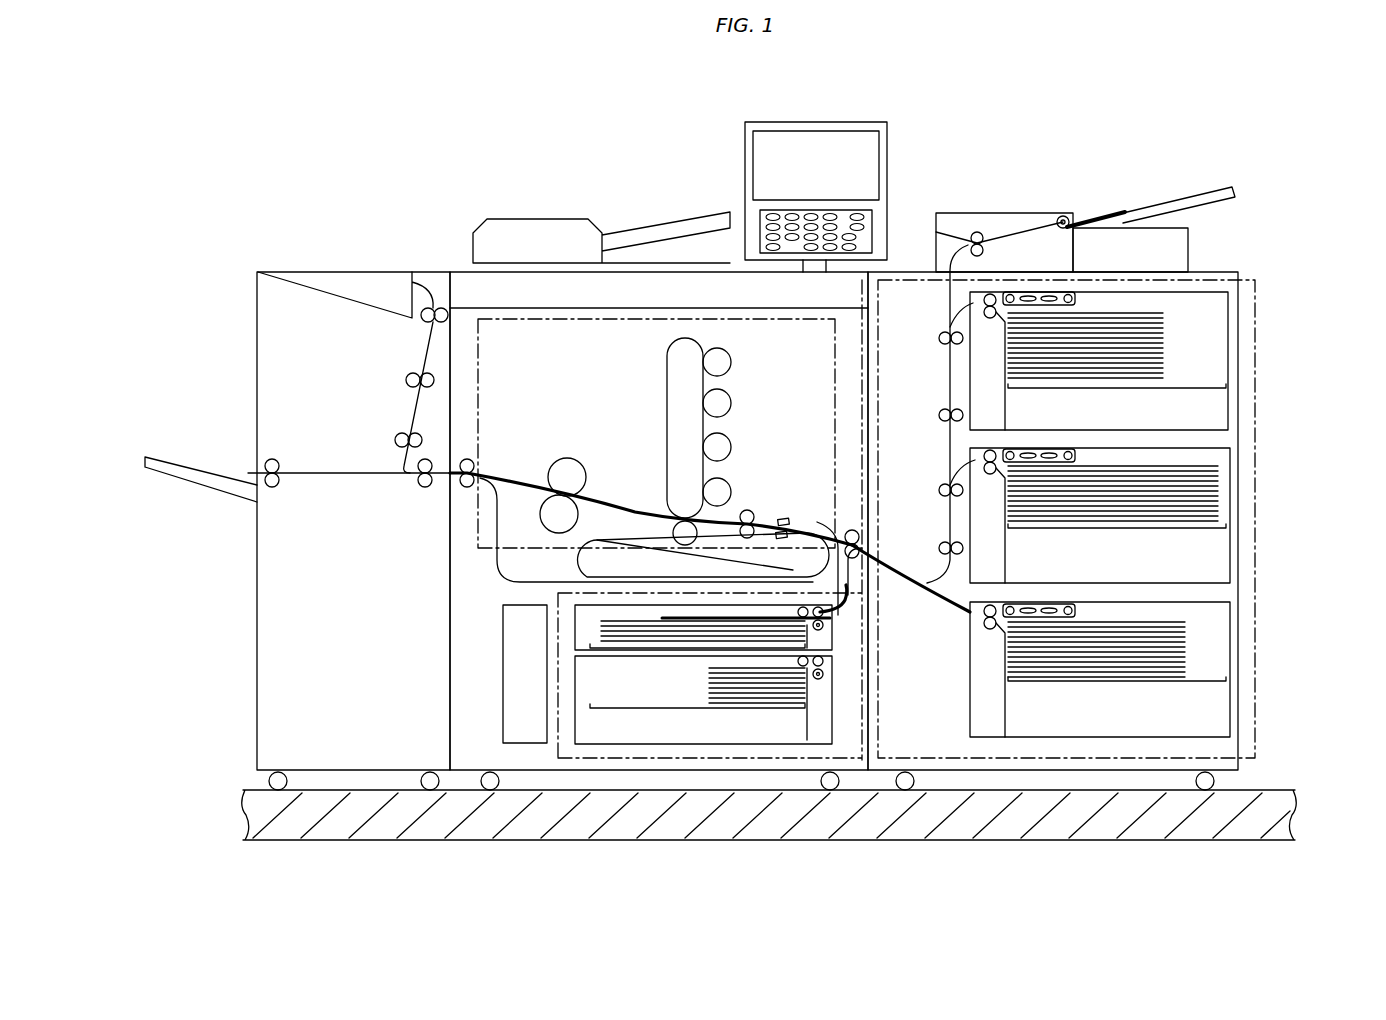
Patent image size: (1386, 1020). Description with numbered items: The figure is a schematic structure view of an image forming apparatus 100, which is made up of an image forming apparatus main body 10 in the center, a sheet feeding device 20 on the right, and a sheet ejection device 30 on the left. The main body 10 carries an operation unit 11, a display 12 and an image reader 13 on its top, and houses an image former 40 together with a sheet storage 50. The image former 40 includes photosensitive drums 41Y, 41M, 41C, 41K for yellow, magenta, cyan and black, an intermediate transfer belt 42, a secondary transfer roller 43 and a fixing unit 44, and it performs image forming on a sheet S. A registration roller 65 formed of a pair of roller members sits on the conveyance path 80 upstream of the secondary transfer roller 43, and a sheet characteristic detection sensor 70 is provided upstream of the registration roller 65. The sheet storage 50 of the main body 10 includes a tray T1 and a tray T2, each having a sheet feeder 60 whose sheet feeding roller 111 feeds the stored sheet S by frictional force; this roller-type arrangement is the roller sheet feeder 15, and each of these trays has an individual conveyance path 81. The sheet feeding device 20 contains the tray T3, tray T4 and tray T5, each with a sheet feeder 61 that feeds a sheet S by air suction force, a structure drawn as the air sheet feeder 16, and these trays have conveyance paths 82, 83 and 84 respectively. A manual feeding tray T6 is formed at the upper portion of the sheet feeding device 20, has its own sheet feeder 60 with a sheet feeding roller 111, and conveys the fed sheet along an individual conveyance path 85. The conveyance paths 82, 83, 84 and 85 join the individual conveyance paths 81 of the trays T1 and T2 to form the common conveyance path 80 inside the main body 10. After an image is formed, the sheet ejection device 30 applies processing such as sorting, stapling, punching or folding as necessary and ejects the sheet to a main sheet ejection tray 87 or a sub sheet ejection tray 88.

The image forming apparatus 100 is at (481, 36).
The image forming apparatus main body 10 is at (646, 127).
The sheet feeding device 20 is at (1155, 122).
The sheet ejection device 30 is at (350, 152).
The operation unit 11 is at (763, 224).
The display 12 is at (763, 148).
The image reader 13 is at (514, 219).
The roller sheet feeder 15 is at (814, 604).
The air sheet feeder 16 is at (1063, 285).
The image former 40 is at (472, 512).
The photosensitive drum 41Y is at (740, 360).
The photosensitive drum 41M is at (740, 404).
The photosensitive drum 41C is at (740, 447).
The photosensitive drum 41K is at (740, 489).
The intermediate transfer belt 42 is at (667, 386).
The secondary transfer roller 43 is at (672, 537).
The fixing unit 44 is at (563, 466).
The sheet storage 50 is at (1255, 720).
The sheet feeder 60 is at (825, 626).
The sheet feeder 61 is at (1046, 291).
The registration roller 65 is at (757, 528).
The sheet characteristic detection sensor 70 is at (830, 520).
The conveyance path 80 is at (862, 540).
The individual conveyance path 81 is at (846, 584).
The conveyance path 82 is at (951, 330).
The conveyance path 83 is at (950, 445).
The conveyance path 84 is at (955, 590).
The individual conveyance path 85 is at (957, 248).
The main sheet ejection tray 87 is at (162, 462).
The sub sheet ejection tray 88 is at (332, 310).
The sheet feeding roller 111 is at (1058, 219).
The sheet S is at (601, 625).
The tray T1 is at (835, 641).
The tray T2 is at (825, 720).
The tray T3 is at (1222, 353).
The tray T4 is at (1222, 510).
The tray T5 is at (1222, 665).
The manual feeding tray T6 is at (964, 215).